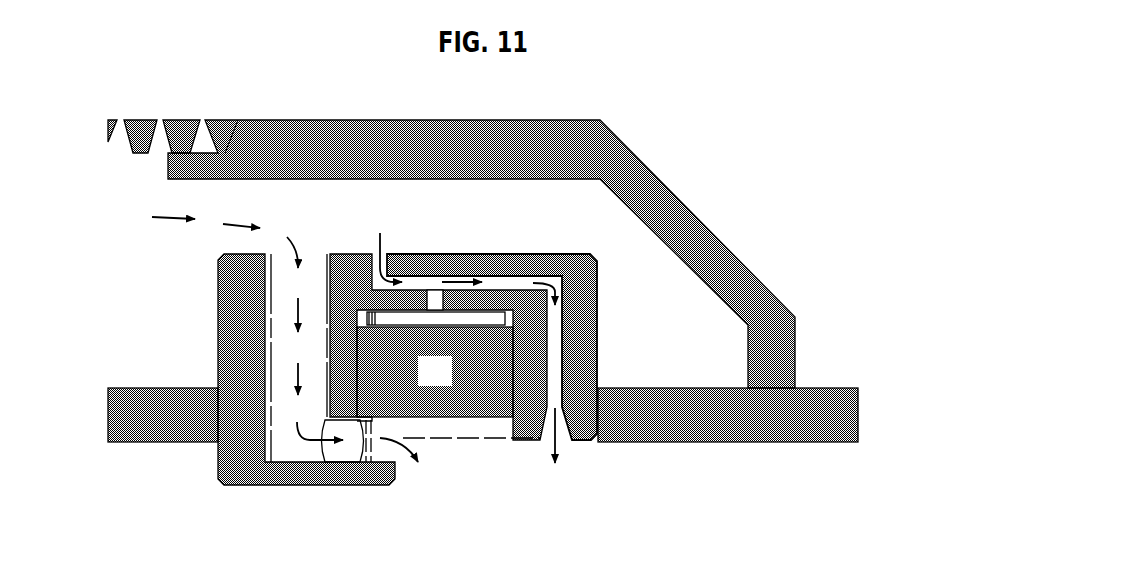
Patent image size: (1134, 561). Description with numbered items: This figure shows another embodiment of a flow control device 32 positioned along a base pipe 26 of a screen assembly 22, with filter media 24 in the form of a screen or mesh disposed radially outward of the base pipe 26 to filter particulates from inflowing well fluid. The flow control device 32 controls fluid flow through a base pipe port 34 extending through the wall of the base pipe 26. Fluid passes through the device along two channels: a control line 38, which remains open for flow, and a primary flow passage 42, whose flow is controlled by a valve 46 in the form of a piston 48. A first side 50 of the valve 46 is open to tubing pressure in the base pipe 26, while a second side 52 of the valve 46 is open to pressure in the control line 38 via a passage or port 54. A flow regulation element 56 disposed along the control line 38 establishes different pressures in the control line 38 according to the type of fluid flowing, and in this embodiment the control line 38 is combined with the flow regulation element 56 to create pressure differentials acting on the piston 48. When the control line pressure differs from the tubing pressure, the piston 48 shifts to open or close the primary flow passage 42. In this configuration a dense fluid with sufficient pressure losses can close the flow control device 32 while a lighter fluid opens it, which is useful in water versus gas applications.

The screen assembly 22 is at (222, 97).
The filter media 24 is at (136, 119).
The base pipe 26 is at (824, 388).
The flow control device 32 is at (542, 236).
The base pipe port 34 is at (419, 490).
The control line 38 is at (445, 273).
The primary flow passage 42 is at (281, 343).
The valve 46 is at (481, 427).
The piston 48 is at (449, 383).
The first side of the valve 50 is at (441, 427).
The second side of the valve 52 is at (488, 318).
The passage or port 54 is at (419, 302).
The flow regulation element 56 is at (534, 428).